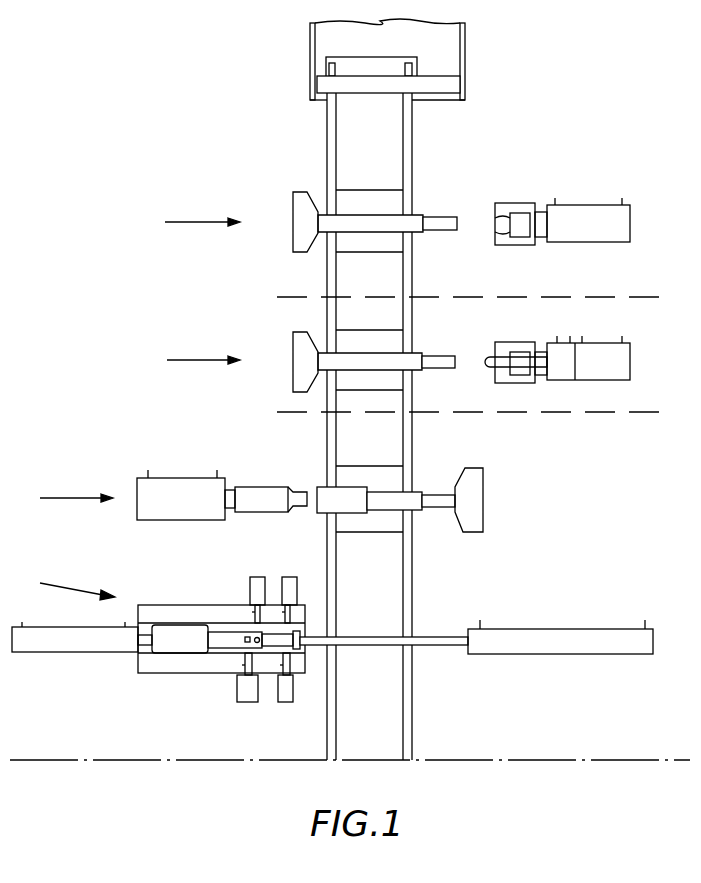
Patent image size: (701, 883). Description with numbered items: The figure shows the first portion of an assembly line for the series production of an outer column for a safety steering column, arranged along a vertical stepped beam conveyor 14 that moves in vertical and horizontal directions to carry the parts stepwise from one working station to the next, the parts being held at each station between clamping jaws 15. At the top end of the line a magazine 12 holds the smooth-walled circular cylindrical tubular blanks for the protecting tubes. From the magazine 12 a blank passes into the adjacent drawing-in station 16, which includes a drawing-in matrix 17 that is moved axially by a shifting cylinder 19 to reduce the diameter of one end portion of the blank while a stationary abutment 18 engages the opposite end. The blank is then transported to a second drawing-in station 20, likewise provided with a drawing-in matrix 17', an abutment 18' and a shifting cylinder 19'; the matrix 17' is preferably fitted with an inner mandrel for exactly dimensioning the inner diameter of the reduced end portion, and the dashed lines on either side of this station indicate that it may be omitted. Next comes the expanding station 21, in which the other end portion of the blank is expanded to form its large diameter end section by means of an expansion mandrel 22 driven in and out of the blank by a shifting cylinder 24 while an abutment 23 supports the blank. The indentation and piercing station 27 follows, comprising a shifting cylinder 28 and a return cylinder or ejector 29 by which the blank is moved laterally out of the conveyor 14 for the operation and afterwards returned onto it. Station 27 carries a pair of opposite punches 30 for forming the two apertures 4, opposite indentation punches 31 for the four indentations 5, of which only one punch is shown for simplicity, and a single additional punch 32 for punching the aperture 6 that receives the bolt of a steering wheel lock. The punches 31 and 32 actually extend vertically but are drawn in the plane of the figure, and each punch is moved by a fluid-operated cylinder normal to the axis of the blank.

The magazine 12 is at (453, 40).
The stepped beam conveyor 14 is at (410, 118).
The clamping jaws 15 is at (395, 202).
The drawing-in station 16 is at (188, 225).
The drawing-in matrix 17 is at (511, 197).
The drawing-in matrix 17' is at (528, 343).
The stationary abutment 18 is at (265, 200).
The abutment 18' is at (275, 367).
The shifting cylinder 19 is at (586, 195).
The shifting cylinder 19' is at (600, 342).
The second drawing-in station 20 is at (318, 86).
The expanding station 21 is at (62, 500).
The expansion mandrel 22 is at (252, 495).
The abutment 23 is at (480, 490).
The shifting cylinder 24 is at (170, 497).
The indentation and piercing station 27 is at (157, 621).
The shifting cylinder 28 is at (570, 640).
The return cylinder or ejector 29 is at (72, 643).
The punches 30 is at (285, 660).
The indentation punches 31 is at (263, 632).
The additional punch 32 is at (243, 660).
The apertures 4 is at (290, 640).
The indentations 5 is at (256, 640).
The aperture 6 is at (247, 638).